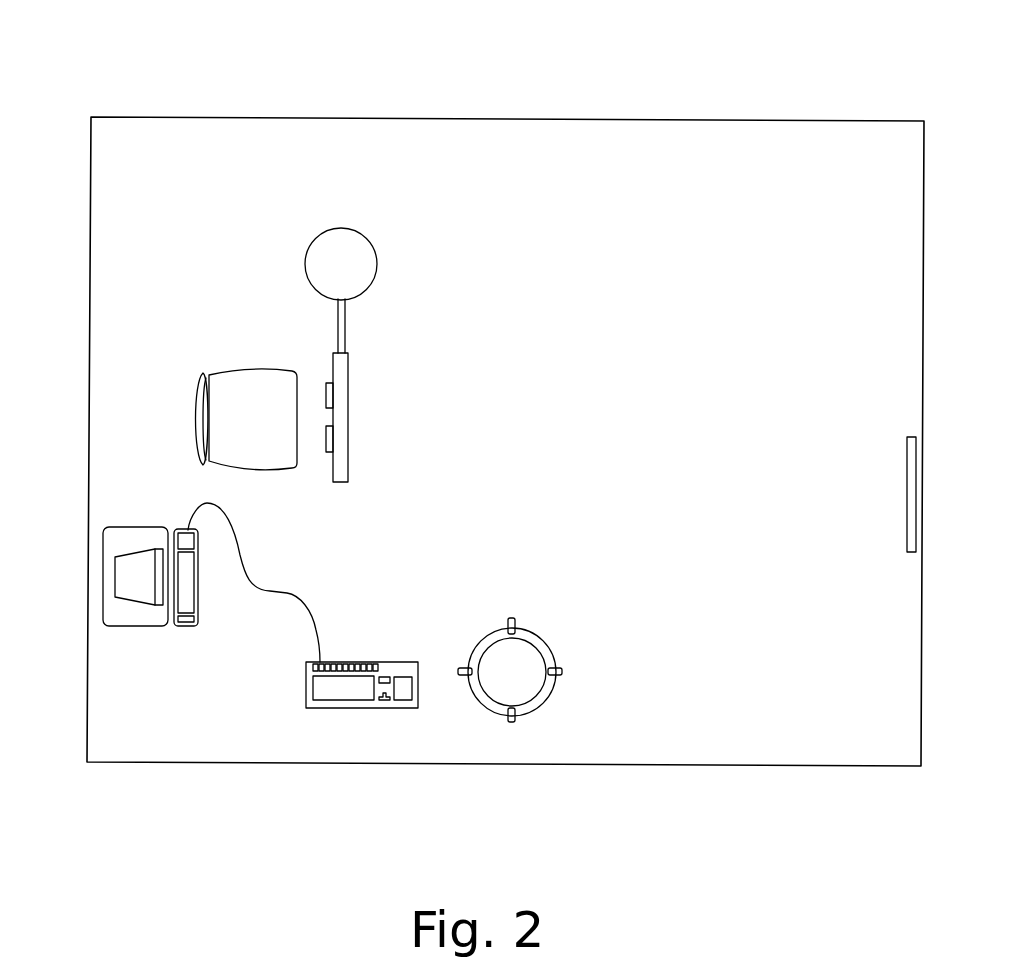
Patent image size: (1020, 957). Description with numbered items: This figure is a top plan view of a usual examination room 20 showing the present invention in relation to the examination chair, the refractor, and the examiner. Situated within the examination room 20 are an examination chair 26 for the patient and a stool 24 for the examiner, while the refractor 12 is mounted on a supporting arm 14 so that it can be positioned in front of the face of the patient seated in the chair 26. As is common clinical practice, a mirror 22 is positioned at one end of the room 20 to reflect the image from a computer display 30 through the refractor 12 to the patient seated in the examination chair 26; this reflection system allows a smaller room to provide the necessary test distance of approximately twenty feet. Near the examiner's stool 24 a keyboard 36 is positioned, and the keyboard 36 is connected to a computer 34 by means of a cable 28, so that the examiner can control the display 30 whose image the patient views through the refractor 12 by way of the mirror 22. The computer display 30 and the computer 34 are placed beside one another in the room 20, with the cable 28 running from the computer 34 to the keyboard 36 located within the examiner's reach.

The refractor 12 is at (348, 438).
The supporting arm 14 is at (372, 243).
The examination room 20 is at (788, 121).
The mirror 22 is at (907, 509).
The stool 24 is at (510, 722).
The examination chair 26 is at (233, 372).
The cable 28 is at (287, 593).
The computer display 30 is at (132, 527).
The computer 34 is at (184, 626).
The keyboard 36 is at (341, 708).